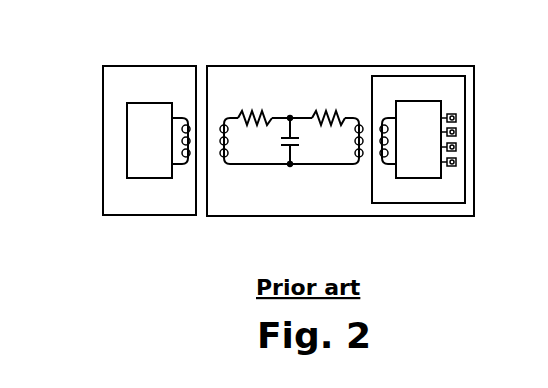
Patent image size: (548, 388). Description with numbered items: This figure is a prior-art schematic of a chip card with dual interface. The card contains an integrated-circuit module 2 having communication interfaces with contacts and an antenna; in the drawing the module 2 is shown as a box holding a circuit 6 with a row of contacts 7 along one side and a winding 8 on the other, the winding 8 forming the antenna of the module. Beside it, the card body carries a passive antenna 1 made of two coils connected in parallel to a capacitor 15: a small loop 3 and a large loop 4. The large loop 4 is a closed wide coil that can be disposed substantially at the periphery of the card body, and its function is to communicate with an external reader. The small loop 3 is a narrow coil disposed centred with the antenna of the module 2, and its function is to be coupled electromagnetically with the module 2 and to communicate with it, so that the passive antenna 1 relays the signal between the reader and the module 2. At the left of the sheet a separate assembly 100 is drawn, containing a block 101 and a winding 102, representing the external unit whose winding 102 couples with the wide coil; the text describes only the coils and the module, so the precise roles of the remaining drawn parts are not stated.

The filter module 1 is at (263, 80).
The integrated-circuit module 2 is at (420, 101).
The small loop 3 is at (337, 100).
The large loop 4 is at (241, 91).
The integrated circuit 6 is at (418, 103).
The terminals 7 is at (474, 129).
The coil 8 is at (392, 188).
The capacitor 15 is at (306, 187).
The module 100 is at (149, 108).
The integrated circuit 101 is at (108, 140).
The coil 102 is at (192, 188).